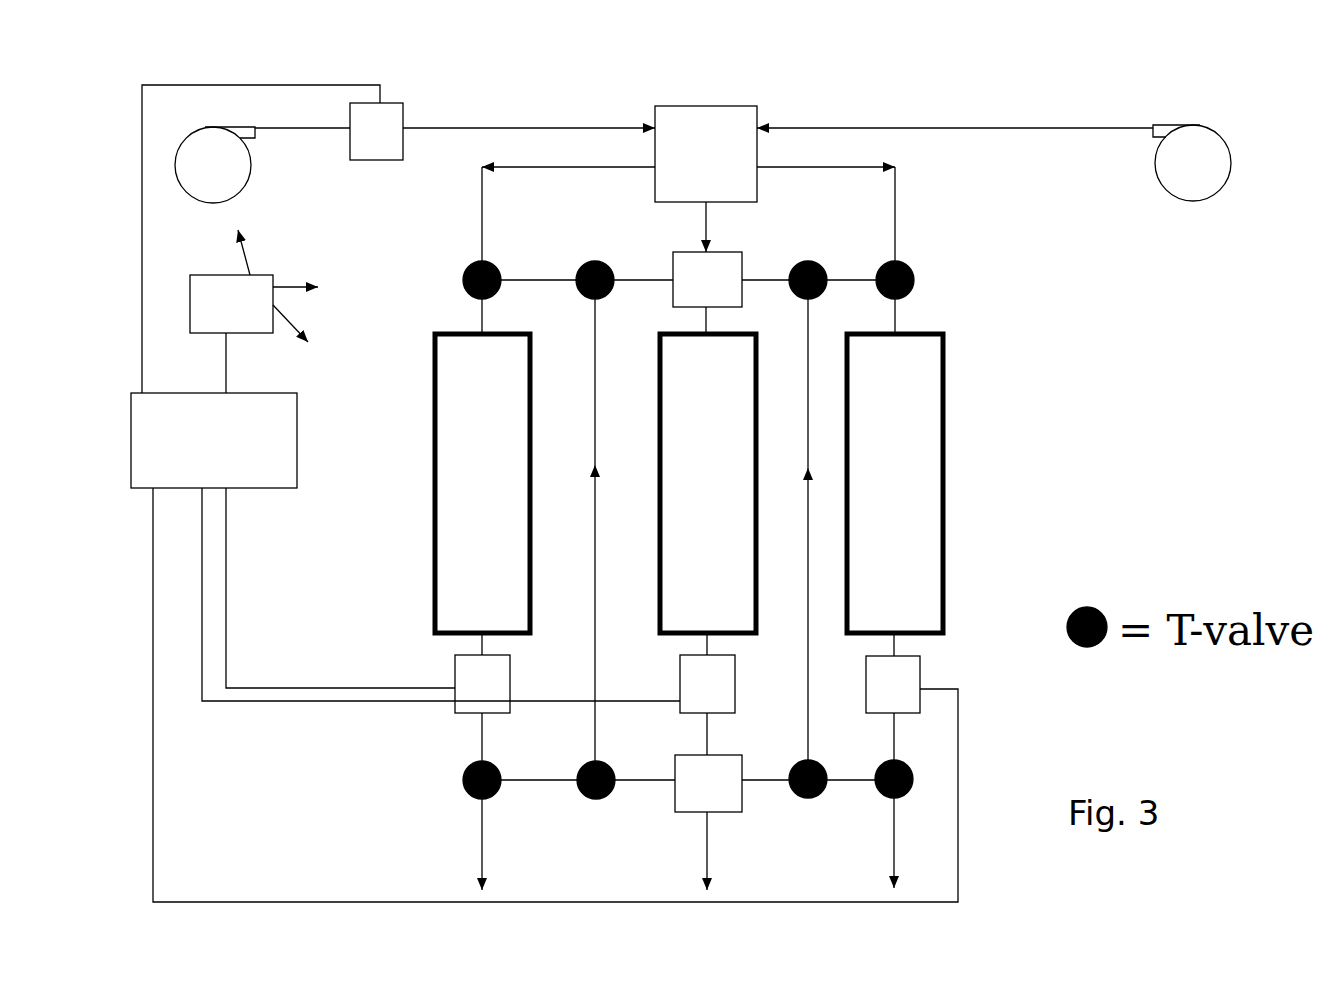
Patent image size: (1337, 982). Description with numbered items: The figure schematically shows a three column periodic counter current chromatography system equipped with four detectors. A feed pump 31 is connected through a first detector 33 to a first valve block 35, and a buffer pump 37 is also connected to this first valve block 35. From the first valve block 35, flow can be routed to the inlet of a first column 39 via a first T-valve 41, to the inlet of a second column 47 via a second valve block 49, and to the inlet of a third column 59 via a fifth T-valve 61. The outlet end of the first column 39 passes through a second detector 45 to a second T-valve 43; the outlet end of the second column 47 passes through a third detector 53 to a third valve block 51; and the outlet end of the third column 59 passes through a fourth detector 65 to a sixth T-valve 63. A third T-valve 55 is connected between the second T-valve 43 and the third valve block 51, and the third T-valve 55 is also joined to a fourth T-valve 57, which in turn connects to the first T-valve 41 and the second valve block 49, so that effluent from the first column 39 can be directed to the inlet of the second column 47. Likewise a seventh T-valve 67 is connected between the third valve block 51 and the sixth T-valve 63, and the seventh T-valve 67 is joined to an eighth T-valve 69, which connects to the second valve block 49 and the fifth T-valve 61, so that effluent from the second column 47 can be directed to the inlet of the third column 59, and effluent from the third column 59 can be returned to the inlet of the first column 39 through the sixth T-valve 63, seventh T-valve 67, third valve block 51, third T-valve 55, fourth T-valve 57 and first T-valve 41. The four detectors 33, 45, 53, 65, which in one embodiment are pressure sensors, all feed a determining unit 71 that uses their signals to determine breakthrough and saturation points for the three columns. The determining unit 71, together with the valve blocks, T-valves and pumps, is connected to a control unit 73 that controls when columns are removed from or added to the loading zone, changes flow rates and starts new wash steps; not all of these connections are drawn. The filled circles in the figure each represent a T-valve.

The feed pump 31 is at (250, 170).
The first detector 33 is at (403, 120).
The first valve block 35 is at (687, 107).
The buffer pump 37 is at (1220, 130).
The first column 39 is at (437, 405).
The first T-valve 41 is at (462, 275).
The second T-valve 43 is at (462, 782).
The second detector 45 is at (452, 678).
The second column 47 is at (662, 535).
The second valve block 49 is at (745, 278).
The third valve block 51 is at (676, 800).
The third detector 53 is at (685, 677).
The third T-valve 55 is at (603, 800).
The fourth T-valve 57 is at (598, 262).
The third column 59 is at (945, 465).
The fifth T-valve 61 is at (912, 283).
The sixth T-valve 63 is at (912, 783).
The fourth detector 65 is at (922, 677).
The seventh T-valve 67 is at (818, 797).
The eighth T-valve 69 is at (812, 265).
The determining unit 71 is at (297, 465).
The control unit 73 is at (190, 300).